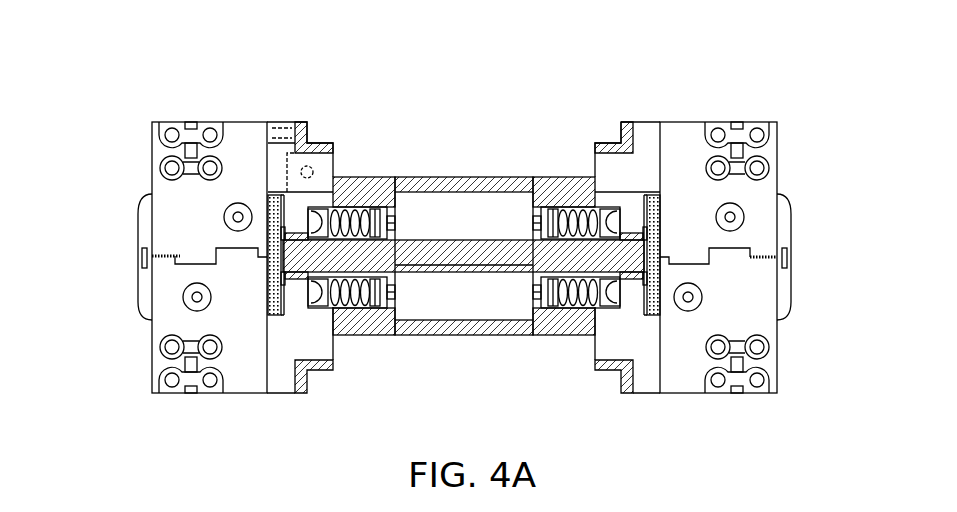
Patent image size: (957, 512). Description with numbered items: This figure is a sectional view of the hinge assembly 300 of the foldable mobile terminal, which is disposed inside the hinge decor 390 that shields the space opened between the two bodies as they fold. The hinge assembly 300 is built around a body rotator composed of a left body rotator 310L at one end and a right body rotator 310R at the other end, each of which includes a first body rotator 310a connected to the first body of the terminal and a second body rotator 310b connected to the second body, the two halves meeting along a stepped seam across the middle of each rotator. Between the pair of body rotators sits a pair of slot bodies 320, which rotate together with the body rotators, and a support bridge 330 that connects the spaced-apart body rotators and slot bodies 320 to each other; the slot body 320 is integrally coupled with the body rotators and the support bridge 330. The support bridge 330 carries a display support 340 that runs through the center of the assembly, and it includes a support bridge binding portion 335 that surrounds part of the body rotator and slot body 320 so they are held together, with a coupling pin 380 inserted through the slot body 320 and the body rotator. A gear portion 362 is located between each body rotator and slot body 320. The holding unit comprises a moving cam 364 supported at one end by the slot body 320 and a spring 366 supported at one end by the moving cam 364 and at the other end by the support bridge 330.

The hinge assembly 300 is at (210, 39).
The left body rotator 310L is at (72, 212).
The right body rotator 310R is at (855, 212).
The first body rotator 310a is at (152, 216).
The second body rotator 310b is at (152, 292).
The slot body 320 is at (643, 150).
The support bridge 330 is at (544, 338).
The support bridge binding portion 335 is at (307, 383).
The display support 340 is at (465, 258).
The gear portion 362 is at (274, 316).
The moving cam 364 is at (602, 207).
The spring 366 is at (352, 309).
The coupling pin 380 is at (283, 122).
The hinge decor 390 is at (792, 305).